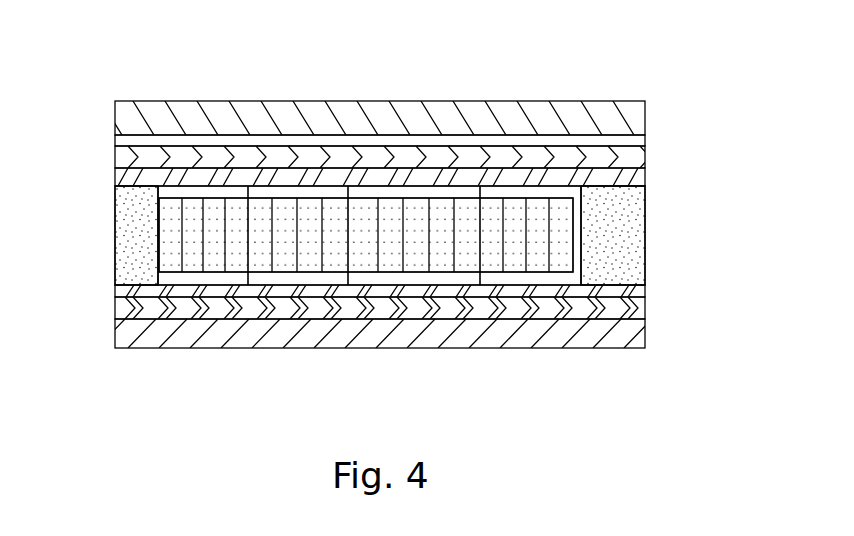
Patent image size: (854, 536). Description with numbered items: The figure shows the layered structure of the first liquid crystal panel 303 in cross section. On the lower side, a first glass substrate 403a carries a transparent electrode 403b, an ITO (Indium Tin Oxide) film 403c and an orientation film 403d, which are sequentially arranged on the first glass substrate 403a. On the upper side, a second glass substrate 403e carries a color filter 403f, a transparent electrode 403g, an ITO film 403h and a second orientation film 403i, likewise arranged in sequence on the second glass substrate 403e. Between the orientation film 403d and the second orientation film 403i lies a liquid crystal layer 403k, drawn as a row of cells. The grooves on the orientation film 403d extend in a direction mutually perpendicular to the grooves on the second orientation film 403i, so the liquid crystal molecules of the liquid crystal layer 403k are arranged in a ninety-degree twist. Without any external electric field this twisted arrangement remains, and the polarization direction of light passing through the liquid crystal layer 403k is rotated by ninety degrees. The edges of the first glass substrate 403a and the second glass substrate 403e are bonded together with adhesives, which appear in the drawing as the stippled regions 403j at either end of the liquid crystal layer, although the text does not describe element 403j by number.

The first liquid crystal panel 303 is at (645, 78).
The first glass substrate 403a is at (632, 326).
The transparent electrode 403b is at (630, 305).
The ITO film 403c is at (635, 289).
The orientation film 403d is at (570, 281).
The second glass substrate 403e is at (128, 130).
The color filter 403f is at (120, 141).
The transparent electrode 403g is at (125, 159).
The ITO film 403h is at (128, 181).
The second orientation film 403i is at (165, 193).
The edge seal 403j is at (133, 277).
The liquid crystal layer 403k is at (562, 230).